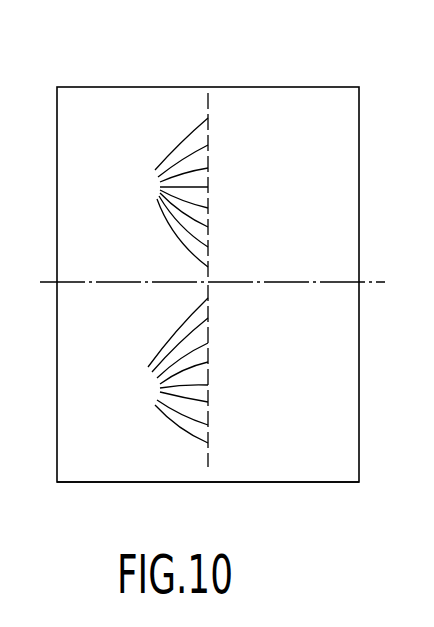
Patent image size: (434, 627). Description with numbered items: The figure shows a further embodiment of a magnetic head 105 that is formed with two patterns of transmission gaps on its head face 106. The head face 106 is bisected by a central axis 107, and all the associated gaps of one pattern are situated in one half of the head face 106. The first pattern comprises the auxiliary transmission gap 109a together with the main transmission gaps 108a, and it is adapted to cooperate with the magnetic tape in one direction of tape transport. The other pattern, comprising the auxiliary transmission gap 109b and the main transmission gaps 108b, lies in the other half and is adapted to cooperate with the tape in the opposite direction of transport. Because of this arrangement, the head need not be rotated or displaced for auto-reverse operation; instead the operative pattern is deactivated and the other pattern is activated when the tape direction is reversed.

The magnetic head 105 is at (88, 84).
The head face 106 is at (121, 470).
The central axis 107 is at (370, 282).
The main transmission gaps 108a is at (160, 192).
The main transmission gaps 108b is at (160, 370).
The auxiliary transmission gap 109a is at (208, 100).
The auxiliary transmission gap 109b is at (208, 468).